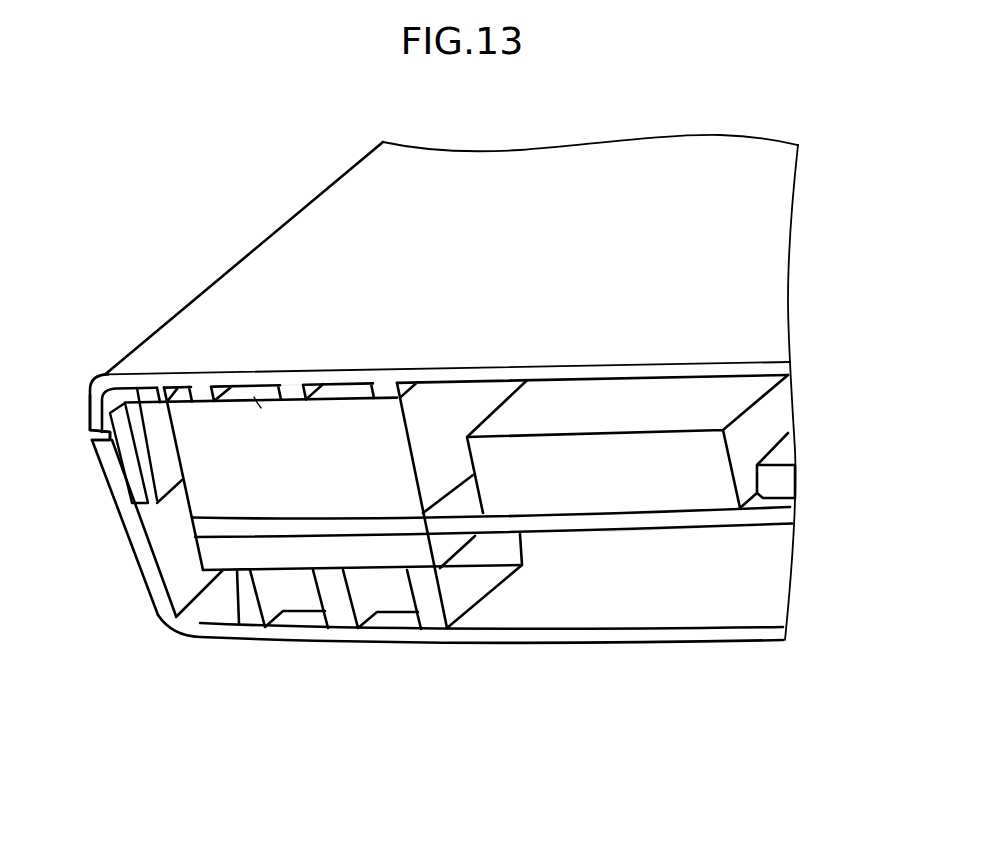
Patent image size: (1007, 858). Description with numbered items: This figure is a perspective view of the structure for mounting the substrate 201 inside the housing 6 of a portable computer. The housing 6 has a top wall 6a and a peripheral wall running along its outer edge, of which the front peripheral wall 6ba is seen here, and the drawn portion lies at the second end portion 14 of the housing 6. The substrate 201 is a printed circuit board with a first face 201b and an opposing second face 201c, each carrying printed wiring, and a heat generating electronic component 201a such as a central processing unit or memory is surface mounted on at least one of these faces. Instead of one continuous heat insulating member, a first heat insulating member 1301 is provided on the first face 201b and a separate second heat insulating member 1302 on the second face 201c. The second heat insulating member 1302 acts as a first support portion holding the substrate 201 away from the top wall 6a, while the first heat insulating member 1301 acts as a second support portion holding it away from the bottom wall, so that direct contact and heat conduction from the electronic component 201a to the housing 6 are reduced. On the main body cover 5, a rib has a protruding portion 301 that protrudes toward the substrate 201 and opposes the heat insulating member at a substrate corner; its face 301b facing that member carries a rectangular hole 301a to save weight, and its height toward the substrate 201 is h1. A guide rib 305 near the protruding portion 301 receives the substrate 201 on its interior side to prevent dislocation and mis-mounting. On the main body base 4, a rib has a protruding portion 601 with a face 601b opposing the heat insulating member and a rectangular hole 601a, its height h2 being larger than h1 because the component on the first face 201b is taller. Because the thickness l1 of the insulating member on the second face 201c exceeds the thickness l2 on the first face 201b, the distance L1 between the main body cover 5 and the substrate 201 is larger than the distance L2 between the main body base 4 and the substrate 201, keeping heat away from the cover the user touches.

The housing 6 is at (327, 190).
The main body cover 5 is at (293, 262).
The top wall 6a is at (140, 358).
The guide rib 305 is at (137, 418).
The front peripheral wall 6ba is at (104, 473).
The second end portion 14 is at (140, 573).
The protruding portion 301 is at (198, 403).
The second heat insulating member 1302 is at (212, 493).
The face 301b is at (385, 395).
The rectangular hole 301a is at (311, 398).
The height of the protruding portions h1 is at (332, 362).
The thickness of the heat insulating member on the second face l1 is at (342, 401).
The substrate 201 is at (553, 528).
The first face 201b is at (650, 530).
The electronic component 201a is at (783, 457).
The second face 201c is at (752, 510).
The protruding portion 601 is at (333, 585).
The face 601b is at (357, 615).
The rectangular hole 601a is at (285, 600).
The first heat insulating member 1301 is at (307, 585).
The main body base 4 is at (419, 632).
The height of the rib h2 is at (390, 571).
The thickness of the heat insulating member on the first face l2 is at (350, 534).
The distance between the main body cover and the substrate L1 is at (793, 375).
The distance between the main body base and the substrate L2 is at (800, 524).